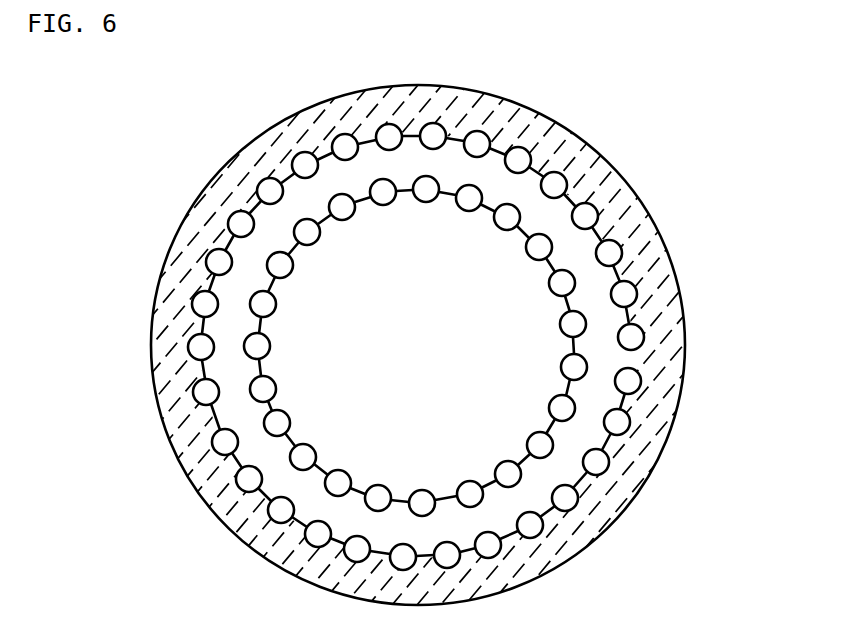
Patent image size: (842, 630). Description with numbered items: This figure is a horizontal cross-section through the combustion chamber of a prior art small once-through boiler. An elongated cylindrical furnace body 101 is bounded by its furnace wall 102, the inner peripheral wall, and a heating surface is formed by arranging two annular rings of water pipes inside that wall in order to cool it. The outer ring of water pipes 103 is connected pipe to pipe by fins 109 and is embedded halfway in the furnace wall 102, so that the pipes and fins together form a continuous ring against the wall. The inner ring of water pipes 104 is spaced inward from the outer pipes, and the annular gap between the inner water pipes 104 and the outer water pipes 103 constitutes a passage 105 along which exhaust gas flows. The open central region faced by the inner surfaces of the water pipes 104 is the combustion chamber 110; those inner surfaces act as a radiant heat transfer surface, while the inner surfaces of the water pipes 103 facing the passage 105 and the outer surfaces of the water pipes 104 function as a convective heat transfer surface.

The furnace body 101 is at (672, 266).
The furnace wall 102 is at (630, 310).
The water pipes (outer side) 103 is at (636, 341).
The water pipes (inner side) 104 is at (570, 366).
The passage 105 is at (595, 406).
The fins 109 is at (612, 449).
The combustion chamber 110 is at (435, 334).